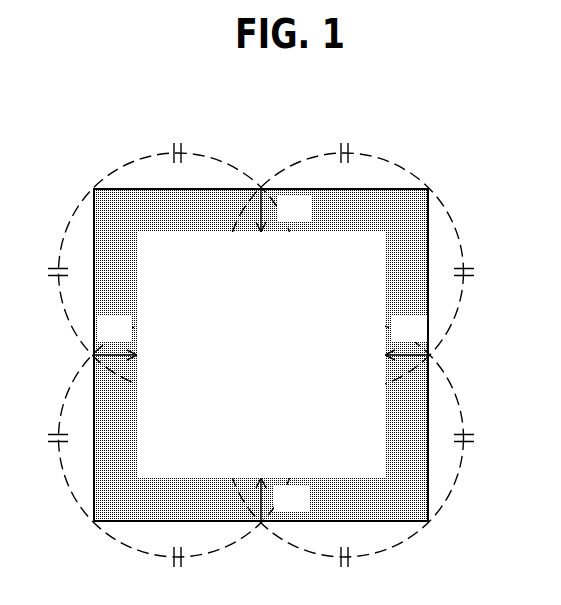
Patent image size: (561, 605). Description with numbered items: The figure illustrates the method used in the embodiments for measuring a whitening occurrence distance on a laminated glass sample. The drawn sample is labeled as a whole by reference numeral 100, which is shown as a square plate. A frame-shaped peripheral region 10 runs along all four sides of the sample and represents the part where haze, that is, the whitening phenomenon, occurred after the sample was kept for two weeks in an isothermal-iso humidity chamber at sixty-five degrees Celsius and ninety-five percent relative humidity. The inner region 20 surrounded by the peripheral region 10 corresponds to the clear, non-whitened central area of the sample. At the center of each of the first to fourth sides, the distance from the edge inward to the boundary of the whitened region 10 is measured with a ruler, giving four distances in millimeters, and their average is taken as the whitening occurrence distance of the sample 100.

The display device / pattern unit 100 is at (84, 115).
The frame-shaped pattern region 10 is at (352, 212).
The inner opening region 20 is at (352, 303).